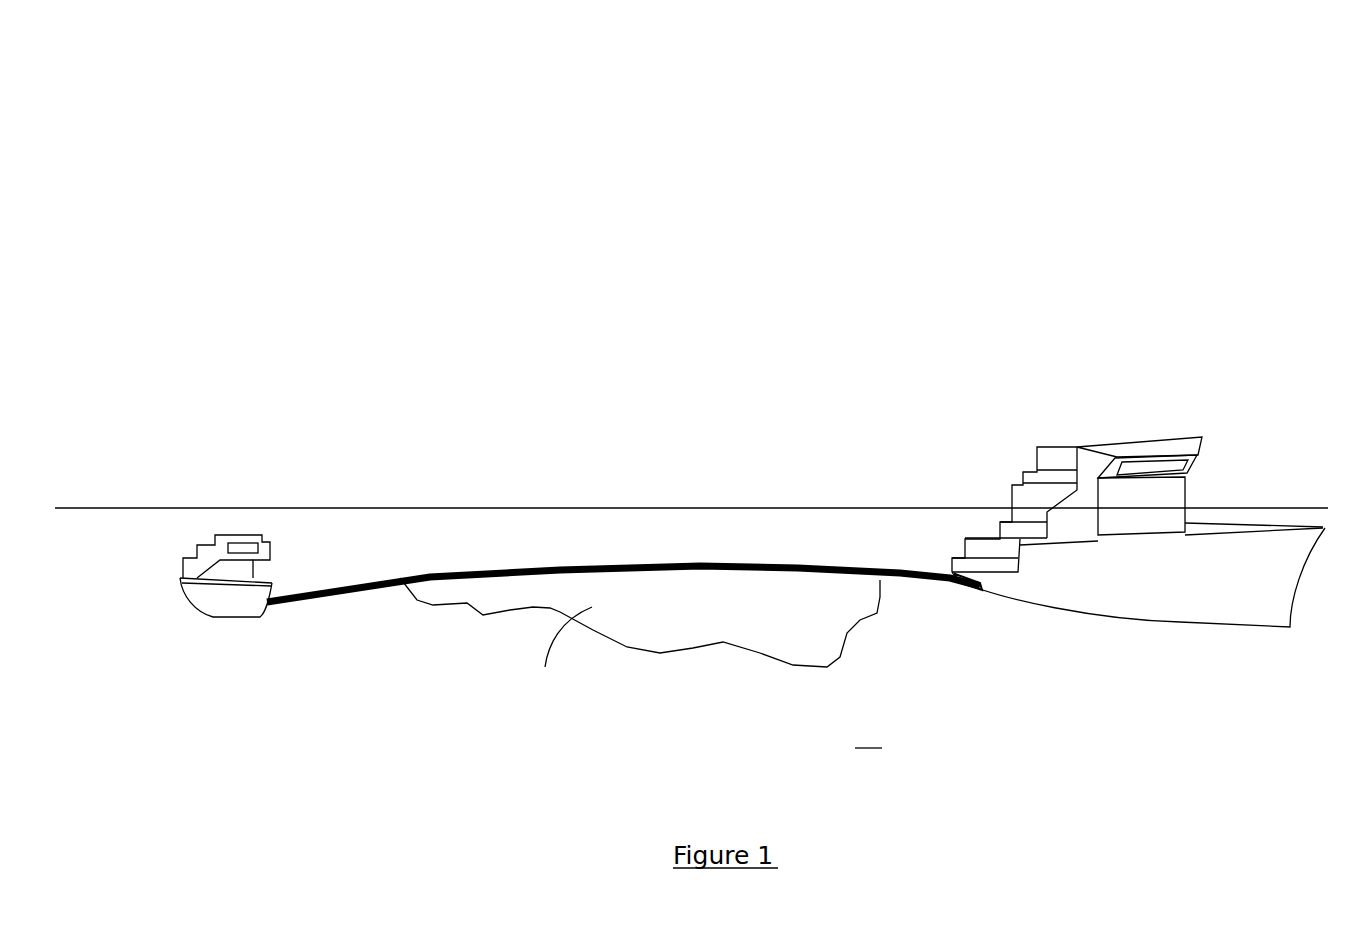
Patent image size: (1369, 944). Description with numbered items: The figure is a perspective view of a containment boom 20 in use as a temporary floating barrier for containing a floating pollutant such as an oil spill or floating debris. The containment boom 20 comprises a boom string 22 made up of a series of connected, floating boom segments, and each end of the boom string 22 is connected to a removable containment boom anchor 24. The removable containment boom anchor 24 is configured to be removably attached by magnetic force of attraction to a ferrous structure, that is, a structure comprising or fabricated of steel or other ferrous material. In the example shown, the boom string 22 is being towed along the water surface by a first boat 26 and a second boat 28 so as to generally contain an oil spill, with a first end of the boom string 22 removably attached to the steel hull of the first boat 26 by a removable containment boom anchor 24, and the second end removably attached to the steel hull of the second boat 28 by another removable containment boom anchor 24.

The containment boom 20 is at (691, 387).
The boom string 22 is at (798, 565).
The removable containment boom anchor 24 is at (977, 583).
The first boat 26 is at (1133, 447).
The second boat 28 is at (237, 538).